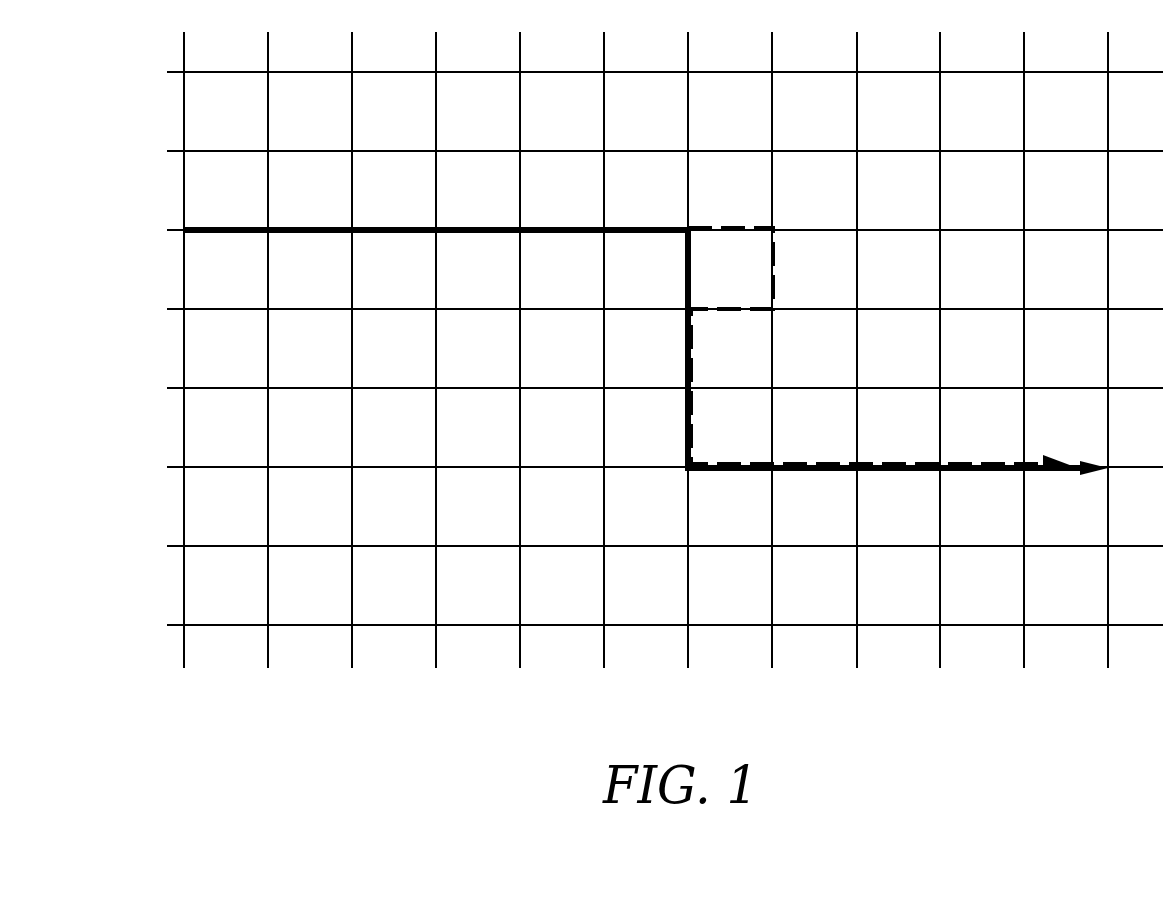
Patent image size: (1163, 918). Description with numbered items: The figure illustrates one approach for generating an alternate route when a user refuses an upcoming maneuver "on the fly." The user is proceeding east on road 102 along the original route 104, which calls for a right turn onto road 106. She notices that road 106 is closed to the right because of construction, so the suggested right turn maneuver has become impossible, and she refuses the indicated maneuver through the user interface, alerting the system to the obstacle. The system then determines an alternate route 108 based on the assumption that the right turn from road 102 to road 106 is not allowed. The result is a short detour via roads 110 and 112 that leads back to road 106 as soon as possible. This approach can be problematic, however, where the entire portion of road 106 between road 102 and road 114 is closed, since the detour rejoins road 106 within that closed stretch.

The road 102 is at (957, 228).
The original route 104 is at (503, 228).
The road 106 is at (689, 111).
The alternate route 108 is at (773, 255).
The road 110 is at (773, 122).
The road 112 is at (877, 311).
The road 114 is at (500, 470).